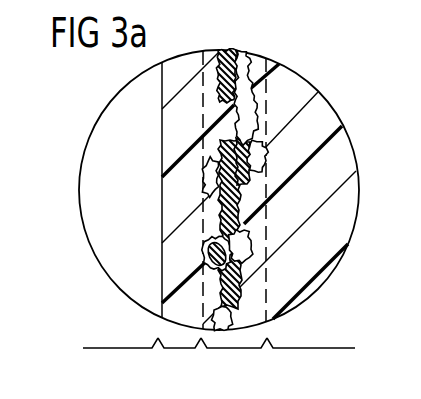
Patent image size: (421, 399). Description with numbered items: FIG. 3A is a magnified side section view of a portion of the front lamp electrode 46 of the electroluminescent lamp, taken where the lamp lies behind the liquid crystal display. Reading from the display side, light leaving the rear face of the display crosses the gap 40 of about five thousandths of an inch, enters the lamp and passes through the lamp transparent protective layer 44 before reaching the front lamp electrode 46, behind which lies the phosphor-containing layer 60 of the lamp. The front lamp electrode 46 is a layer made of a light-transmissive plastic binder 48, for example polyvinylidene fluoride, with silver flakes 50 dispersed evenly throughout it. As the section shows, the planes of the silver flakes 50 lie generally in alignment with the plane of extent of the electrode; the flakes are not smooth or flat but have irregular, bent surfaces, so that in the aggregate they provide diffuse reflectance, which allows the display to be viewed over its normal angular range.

The gap 40 is at (107, 352).
The lamp transparent protective layer 44 is at (181, 352).
The front lamp electrode 46 is at (231, 352).
The light-transmissive plastic binder 48 is at (253, 73).
The silver flakes 50 is at (220, 60).
The phosphor-containing layer 60 is at (307, 352).